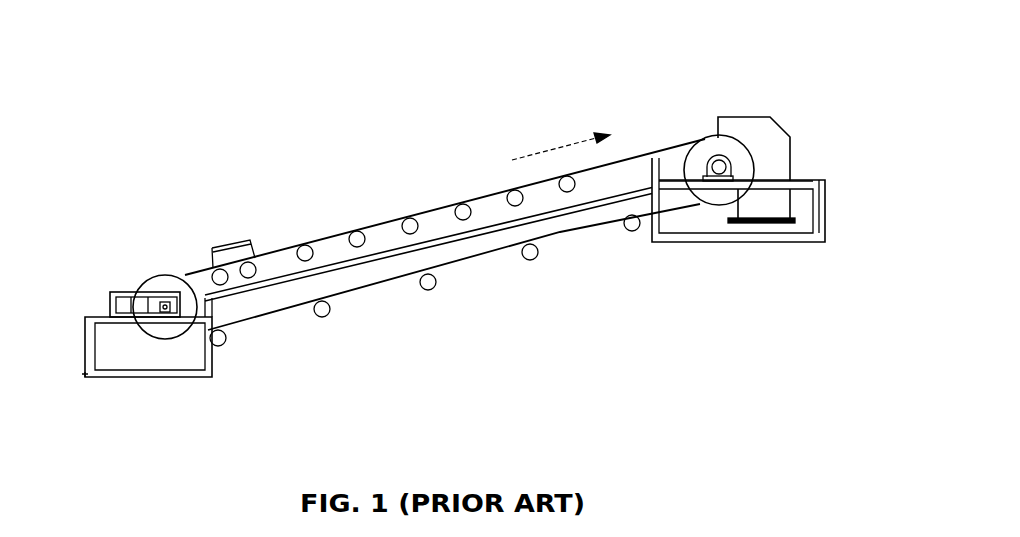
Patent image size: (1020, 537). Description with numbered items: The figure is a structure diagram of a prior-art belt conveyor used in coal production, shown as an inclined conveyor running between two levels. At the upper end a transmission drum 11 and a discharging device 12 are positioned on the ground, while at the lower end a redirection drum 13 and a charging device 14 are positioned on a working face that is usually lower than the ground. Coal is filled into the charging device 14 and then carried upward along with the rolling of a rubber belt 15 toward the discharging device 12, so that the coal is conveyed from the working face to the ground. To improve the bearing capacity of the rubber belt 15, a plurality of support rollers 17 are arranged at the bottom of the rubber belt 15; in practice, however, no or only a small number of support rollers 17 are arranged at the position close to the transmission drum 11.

The transmission drum 11 is at (722, 163).
The discharging device 12 is at (773, 150).
The redirection drum 13 is at (163, 283).
The charging device 14 is at (108, 292).
The rubber belt 15 is at (330, 235).
The support rollers 17 is at (468, 203).